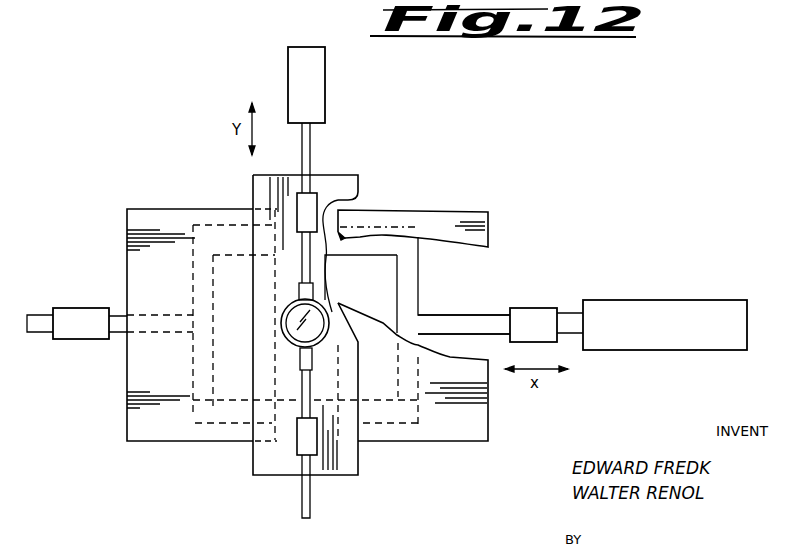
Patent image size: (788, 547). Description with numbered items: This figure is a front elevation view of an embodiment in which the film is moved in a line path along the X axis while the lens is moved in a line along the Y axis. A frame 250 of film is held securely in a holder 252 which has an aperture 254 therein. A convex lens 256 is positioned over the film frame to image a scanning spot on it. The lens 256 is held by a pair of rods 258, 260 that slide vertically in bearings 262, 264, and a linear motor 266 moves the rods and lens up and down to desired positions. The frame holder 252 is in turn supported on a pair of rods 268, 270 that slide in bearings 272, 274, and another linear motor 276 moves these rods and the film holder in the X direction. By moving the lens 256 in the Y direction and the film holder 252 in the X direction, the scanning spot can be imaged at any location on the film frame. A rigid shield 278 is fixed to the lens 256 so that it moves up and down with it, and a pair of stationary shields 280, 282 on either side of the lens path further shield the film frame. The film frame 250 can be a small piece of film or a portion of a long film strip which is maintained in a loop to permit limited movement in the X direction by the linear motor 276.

The frame of film 250 is at (386, 293).
The holder 252 is at (420, 277).
The aperture 254 is at (395, 300).
The convex lens 256 is at (293, 337).
The rod 258 is at (312, 267).
The rod 260 is at (312, 505).
The bearing 262 is at (320, 188).
The bearing 264 is at (300, 447).
The linear motor 266 is at (320, 107).
The rod 268 is at (118, 335).
The rod 270 is at (503, 295).
The bearing 272 is at (73, 313).
The bearing 274 is at (572, 312).
The linear motor 276 is at (672, 300).
The rigid shield 278 is at (340, 468).
The stationary shield 280 is at (172, 441).
The stationary shield 282 is at (488, 441).